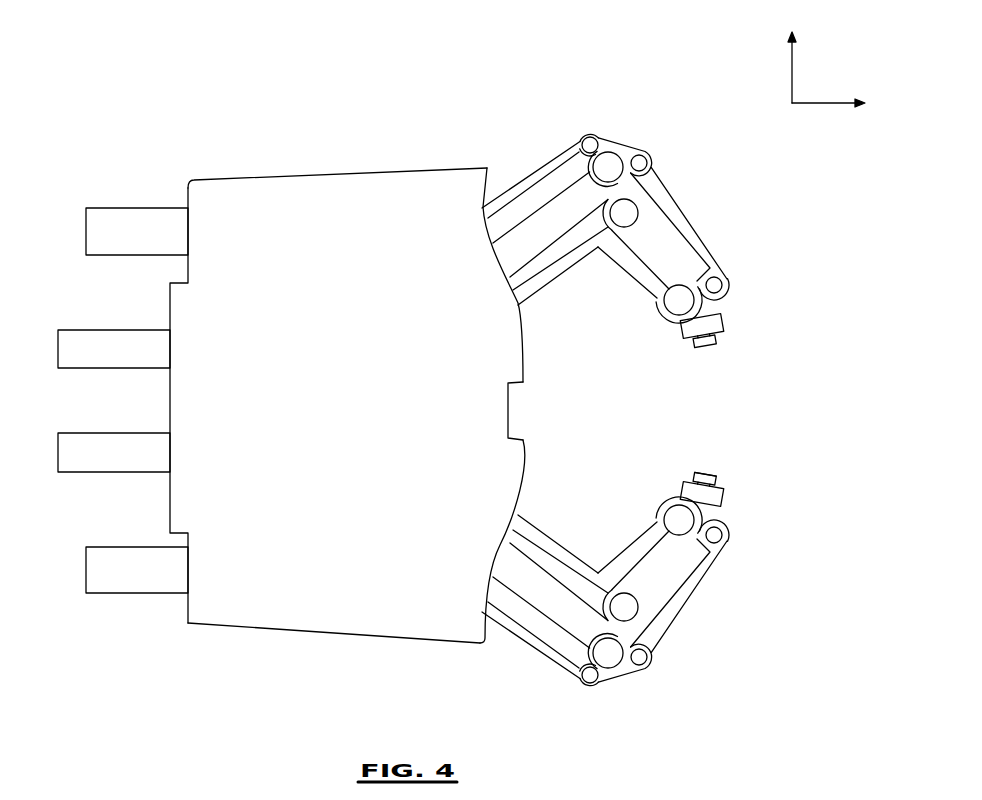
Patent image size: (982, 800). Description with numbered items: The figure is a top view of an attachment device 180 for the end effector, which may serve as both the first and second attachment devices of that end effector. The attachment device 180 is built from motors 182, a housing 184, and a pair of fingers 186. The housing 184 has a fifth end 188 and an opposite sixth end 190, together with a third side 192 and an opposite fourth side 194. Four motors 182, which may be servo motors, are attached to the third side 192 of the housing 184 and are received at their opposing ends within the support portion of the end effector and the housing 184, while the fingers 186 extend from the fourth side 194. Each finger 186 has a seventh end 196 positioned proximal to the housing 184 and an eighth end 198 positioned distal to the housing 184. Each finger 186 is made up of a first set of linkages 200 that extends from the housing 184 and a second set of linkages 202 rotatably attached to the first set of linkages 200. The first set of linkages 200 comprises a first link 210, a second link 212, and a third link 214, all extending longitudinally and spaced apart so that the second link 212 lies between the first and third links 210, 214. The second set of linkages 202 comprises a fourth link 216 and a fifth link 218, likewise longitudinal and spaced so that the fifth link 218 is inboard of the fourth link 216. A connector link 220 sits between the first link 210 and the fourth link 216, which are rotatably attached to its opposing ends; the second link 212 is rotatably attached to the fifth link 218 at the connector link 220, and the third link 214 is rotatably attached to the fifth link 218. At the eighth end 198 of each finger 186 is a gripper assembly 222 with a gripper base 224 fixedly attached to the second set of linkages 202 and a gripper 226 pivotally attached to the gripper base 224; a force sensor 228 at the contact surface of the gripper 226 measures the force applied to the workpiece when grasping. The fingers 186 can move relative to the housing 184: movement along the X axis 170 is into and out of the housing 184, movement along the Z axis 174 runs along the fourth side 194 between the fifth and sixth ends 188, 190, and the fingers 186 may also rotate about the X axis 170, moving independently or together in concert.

The X axis 170 is at (826, 105).
The Z axis 174 is at (794, 72).
The attachment device 180 is at (358, 104).
The motors 182 is at (122, 228).
The housing 184 is at (259, 640).
The fingers 186 is at (707, 627).
The fifth end 188 is at (305, 175).
The sixth end 190 is at (418, 638).
The third side 192 is at (168, 305).
The fourth side 194 is at (508, 423).
The seventh end 196 is at (520, 518).
The eighth end 198 is at (733, 525).
The first set of linkages 200 is at (553, 623).
The second set of linkages 202 is at (660, 578).
The first link 210 is at (522, 178).
The second link 212 is at (569, 188).
The third link 214 is at (558, 265).
The fourth link 216 is at (680, 213).
The fifth link 218 is at (673, 270).
The connector link 220 is at (629, 153).
The gripper assembly 222 is at (738, 332).
The gripper base 224 is at (720, 500).
The gripper 226 is at (717, 482).
The force sensor 228 is at (702, 473).